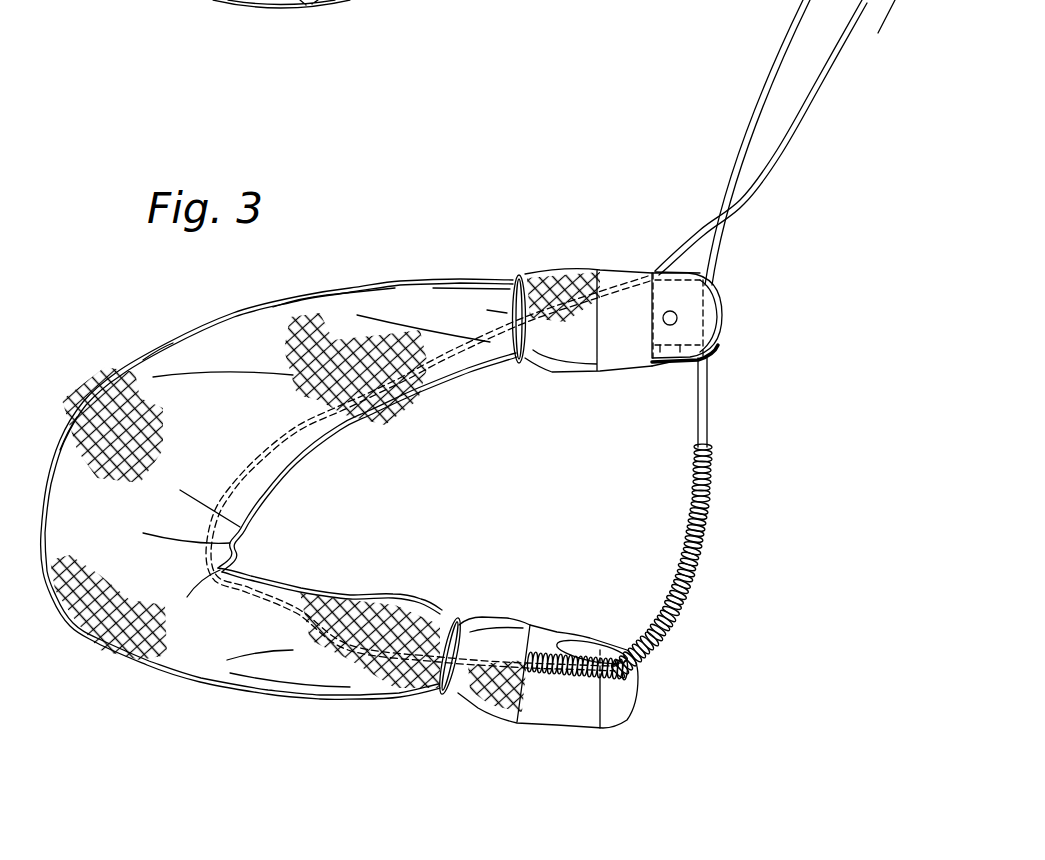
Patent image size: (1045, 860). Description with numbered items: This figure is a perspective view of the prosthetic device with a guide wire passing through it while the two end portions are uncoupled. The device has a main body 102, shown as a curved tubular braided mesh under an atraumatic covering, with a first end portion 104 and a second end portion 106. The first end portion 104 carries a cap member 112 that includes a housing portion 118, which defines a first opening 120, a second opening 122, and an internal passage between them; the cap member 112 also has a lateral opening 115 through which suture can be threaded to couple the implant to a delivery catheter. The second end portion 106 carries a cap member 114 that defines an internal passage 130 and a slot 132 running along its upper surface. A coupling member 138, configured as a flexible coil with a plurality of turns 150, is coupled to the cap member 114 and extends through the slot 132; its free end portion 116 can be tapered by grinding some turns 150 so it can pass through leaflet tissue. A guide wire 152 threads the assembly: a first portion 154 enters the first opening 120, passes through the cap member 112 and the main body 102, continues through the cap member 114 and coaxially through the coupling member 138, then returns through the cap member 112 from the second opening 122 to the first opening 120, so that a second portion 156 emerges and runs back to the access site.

The main body 102 is at (133, 360).
The first end portion 104 is at (463, 275).
The second end portion 106 is at (420, 600).
The cap member 112 is at (607, 373).
The cap member 114 is at (557, 630).
The opening 115 is at (677, 313).
The end portion 116 is at (690, 463).
The housing portion 118 is at (720, 322).
The first opening 120 is at (693, 268).
The second opening 122 is at (667, 365).
The internal passage 130 is at (563, 712).
The slot 132 is at (594, 648).
The coupling member 138 is at (707, 547).
The turns 150 is at (707, 497).
The guide wire 152 is at (820, 87).
The first portion 154 is at (788, 143).
The second portion 156 is at (781, 47).